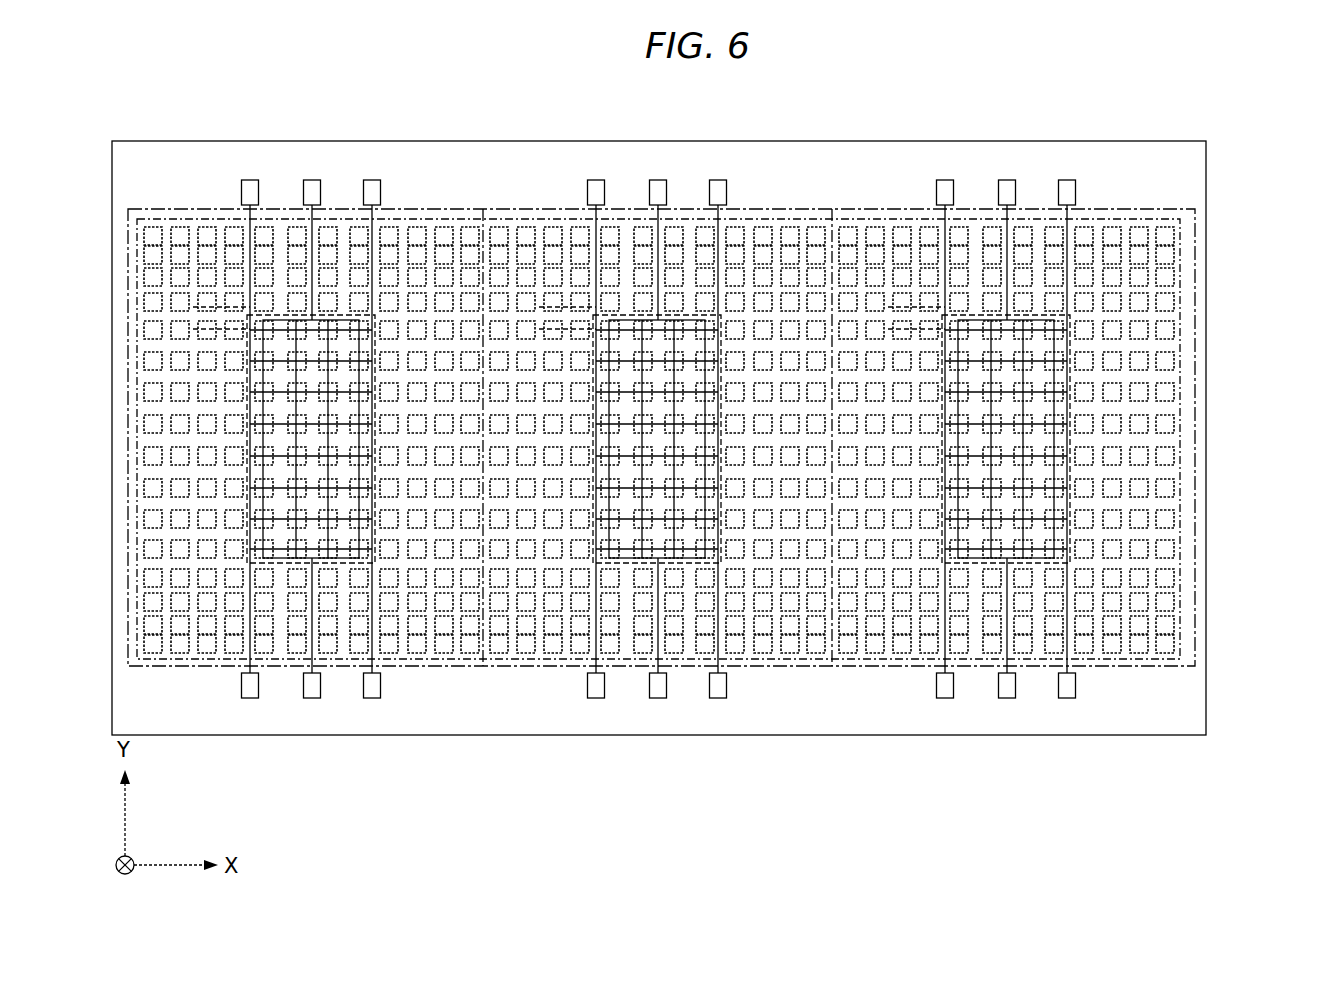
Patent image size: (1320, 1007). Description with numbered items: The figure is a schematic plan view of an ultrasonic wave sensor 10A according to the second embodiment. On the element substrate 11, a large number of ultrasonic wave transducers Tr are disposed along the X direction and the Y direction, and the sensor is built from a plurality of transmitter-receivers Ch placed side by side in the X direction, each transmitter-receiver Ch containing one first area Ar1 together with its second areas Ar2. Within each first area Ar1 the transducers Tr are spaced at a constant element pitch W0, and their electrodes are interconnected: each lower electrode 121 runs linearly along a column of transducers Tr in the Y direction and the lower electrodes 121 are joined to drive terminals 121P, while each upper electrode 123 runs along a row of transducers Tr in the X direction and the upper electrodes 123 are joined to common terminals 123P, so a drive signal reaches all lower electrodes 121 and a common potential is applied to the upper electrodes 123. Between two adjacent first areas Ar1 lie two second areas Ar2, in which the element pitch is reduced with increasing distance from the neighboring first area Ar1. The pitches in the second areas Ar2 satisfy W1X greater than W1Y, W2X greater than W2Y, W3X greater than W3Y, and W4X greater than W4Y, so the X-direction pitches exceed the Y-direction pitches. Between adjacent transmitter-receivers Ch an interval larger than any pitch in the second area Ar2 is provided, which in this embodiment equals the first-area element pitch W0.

The ultrasonic wave sensor 10A is at (172, 136).
The element substrate 11 is at (277, 152).
The ultrasonic wave transducer Tr is at (600, 318).
The transmitter-receiver Ch is at (870, 212).
The upper electrode 123 is at (340, 323).
The lower electrode 121 is at (359, 345).
The common terminal 123P is at (250, 698).
The drive terminal 121P is at (310, 698).
The first area Ar1 is at (278, 570).
The second area Ar2 is at (433, 660).
The element pitch in the first area W0 is at (826, 653).
The first element pitch in the X direction W1X is at (1074, 653).
The second element pitch in the X direction W2X is at (1092, 653).
The third element pitch in the X direction W3X is at (1120, 653).
The fourth element pitch in the X direction W4X is at (1146, 653).
The first element pitch in the Y direction W1Y is at (1174, 558).
The second element pitch in the Y direction W2Y is at (1174, 587).
The third element pitch in the Y direction W3Y is at (1174, 611).
The fourth element pitch in the Y direction W4Y is at (1174, 633).